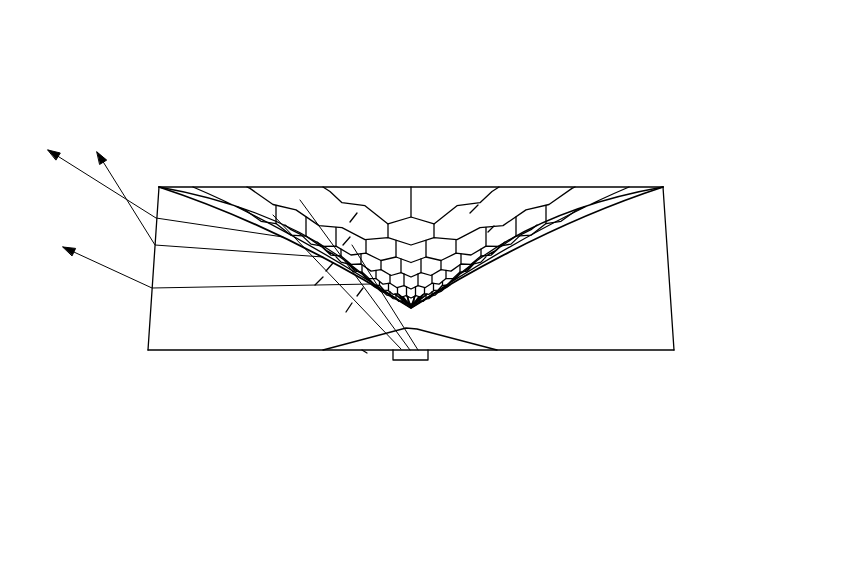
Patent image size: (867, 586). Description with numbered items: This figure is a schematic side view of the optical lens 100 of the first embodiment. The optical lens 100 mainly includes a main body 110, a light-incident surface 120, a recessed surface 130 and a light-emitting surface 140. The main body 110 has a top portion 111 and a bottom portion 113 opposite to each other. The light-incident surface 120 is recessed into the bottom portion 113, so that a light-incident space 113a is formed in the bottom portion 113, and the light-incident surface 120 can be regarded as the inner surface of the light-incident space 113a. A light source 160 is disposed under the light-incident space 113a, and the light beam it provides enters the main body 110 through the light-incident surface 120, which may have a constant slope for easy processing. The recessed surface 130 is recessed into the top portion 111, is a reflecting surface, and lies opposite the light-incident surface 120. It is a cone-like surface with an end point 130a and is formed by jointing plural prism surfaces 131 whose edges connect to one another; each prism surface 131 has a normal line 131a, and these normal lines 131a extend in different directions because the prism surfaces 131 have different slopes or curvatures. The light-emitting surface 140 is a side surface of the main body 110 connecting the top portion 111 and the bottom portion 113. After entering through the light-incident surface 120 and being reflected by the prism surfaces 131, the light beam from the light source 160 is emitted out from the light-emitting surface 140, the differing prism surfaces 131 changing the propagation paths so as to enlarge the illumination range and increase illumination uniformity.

The optical lens 100 is at (114, 53).
The main body 110 is at (660, 283).
The top portion 111 is at (654, 185).
The bottom portion 113 is at (649, 353).
The light-incident space 113a is at (364, 353).
The light-incident surface 120 is at (456, 346).
The recessed surface 130 is at (513, 233).
The end point 130a is at (411, 307).
The prism surfaces 131 is at (273, 194).
The normal line 131a is at (347, 187).
The light-emitting surface 140 is at (147, 323).
The light source 160 is at (410, 360).